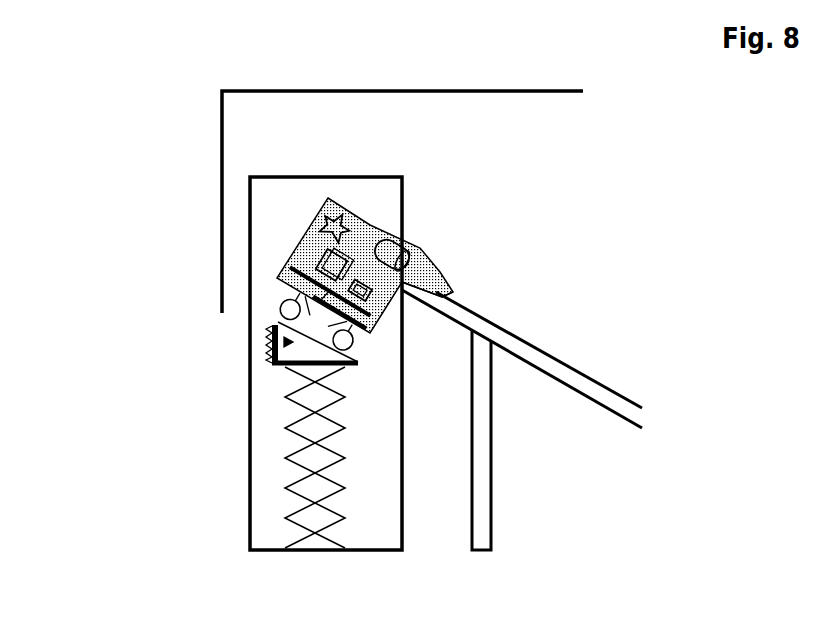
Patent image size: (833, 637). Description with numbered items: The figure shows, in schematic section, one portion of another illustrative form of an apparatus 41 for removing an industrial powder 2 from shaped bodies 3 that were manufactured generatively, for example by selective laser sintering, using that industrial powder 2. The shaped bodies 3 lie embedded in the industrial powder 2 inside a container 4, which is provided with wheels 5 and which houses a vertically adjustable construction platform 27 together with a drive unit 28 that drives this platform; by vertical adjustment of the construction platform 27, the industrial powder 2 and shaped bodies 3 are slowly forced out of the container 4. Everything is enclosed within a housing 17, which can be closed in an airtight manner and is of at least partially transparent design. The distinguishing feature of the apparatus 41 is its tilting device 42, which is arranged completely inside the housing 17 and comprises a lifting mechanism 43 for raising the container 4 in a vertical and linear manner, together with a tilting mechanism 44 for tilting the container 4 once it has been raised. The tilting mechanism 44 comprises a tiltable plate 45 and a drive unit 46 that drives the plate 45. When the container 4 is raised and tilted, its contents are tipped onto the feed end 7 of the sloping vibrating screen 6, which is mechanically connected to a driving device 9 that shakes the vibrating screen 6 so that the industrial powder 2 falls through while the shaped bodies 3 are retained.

The apparatus 41 is at (166, 93).
The housing 17 is at (447, 90).
The tilting device 42 is at (248, 507).
The vibrating screen 6 is at (592, 375).
The driving device 9 is at (478, 478).
The lifting mechanism 43 is at (330, 530).
The tilting mechanism 44 is at (283, 352).
The drive unit 28 is at (300, 360).
The drive unit 46 is at (266, 342).
The tiltable plate 45 is at (321, 300).
The industrial powder 2 is at (441, 274).
The shaped bodies 3 is at (386, 248).
The container 4 is at (282, 290).
The wheels 5 is at (280, 311).
The feed end 7 is at (422, 288).
The construction platform 27 is at (362, 330).